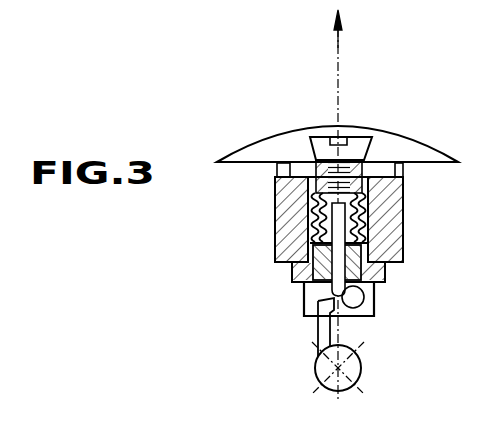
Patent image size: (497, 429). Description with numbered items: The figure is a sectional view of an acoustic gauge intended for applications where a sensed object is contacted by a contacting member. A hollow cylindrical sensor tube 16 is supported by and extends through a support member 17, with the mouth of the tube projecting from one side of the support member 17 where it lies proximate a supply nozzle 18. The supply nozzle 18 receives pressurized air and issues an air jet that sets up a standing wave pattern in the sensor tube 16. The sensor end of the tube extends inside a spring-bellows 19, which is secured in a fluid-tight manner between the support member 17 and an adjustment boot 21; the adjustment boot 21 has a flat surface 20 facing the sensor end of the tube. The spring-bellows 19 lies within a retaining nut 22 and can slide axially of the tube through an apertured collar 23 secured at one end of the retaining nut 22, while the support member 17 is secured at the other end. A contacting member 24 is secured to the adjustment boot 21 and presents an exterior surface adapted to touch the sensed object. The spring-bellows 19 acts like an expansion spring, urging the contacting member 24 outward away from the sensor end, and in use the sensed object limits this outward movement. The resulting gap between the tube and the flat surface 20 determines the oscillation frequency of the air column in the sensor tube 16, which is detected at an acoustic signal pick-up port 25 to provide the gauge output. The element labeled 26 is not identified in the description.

The sensor tube 16 is at (362, 206).
The support member 17 is at (298, 283).
The supply nozzle 18 is at (320, 302).
The spring-bellows 19 is at (368, 220).
The flat surface 20 is at (292, 211).
The adjustment boot 21 is at (352, 137).
The retaining nut 22 is at (283, 172).
The apertured collar 23 is at (277, 182).
The contacting member 24 is at (297, 128).
The acoustic signal pick-up port 25 is at (365, 303).
The nut 26 is at (386, 274).